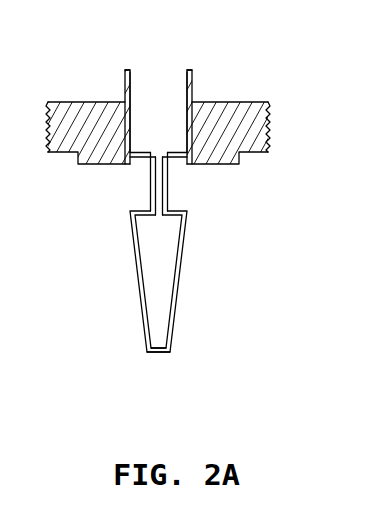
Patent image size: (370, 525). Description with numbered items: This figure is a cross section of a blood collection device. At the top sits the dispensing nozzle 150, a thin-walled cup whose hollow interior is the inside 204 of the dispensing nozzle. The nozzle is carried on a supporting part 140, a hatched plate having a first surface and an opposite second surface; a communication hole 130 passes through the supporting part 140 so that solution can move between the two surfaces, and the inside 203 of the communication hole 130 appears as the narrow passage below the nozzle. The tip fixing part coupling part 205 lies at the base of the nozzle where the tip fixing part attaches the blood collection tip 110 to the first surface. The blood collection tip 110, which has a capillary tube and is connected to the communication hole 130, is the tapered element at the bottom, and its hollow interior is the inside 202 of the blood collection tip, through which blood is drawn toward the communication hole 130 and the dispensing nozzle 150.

The blood collection tip 110 is at (180, 272).
The communication hole 130 is at (165, 134).
The supporting part 140 is at (277, 102).
The dispensing nozzle 150 is at (192, 69).
The inside of the blood collection tip 202 is at (159, 353).
The inside of the communication hole 203 is at (186, 162).
The inside of the dispensing nozzle 204 is at (165, 74).
The tip fixing part coupling part 205 is at (138, 158).